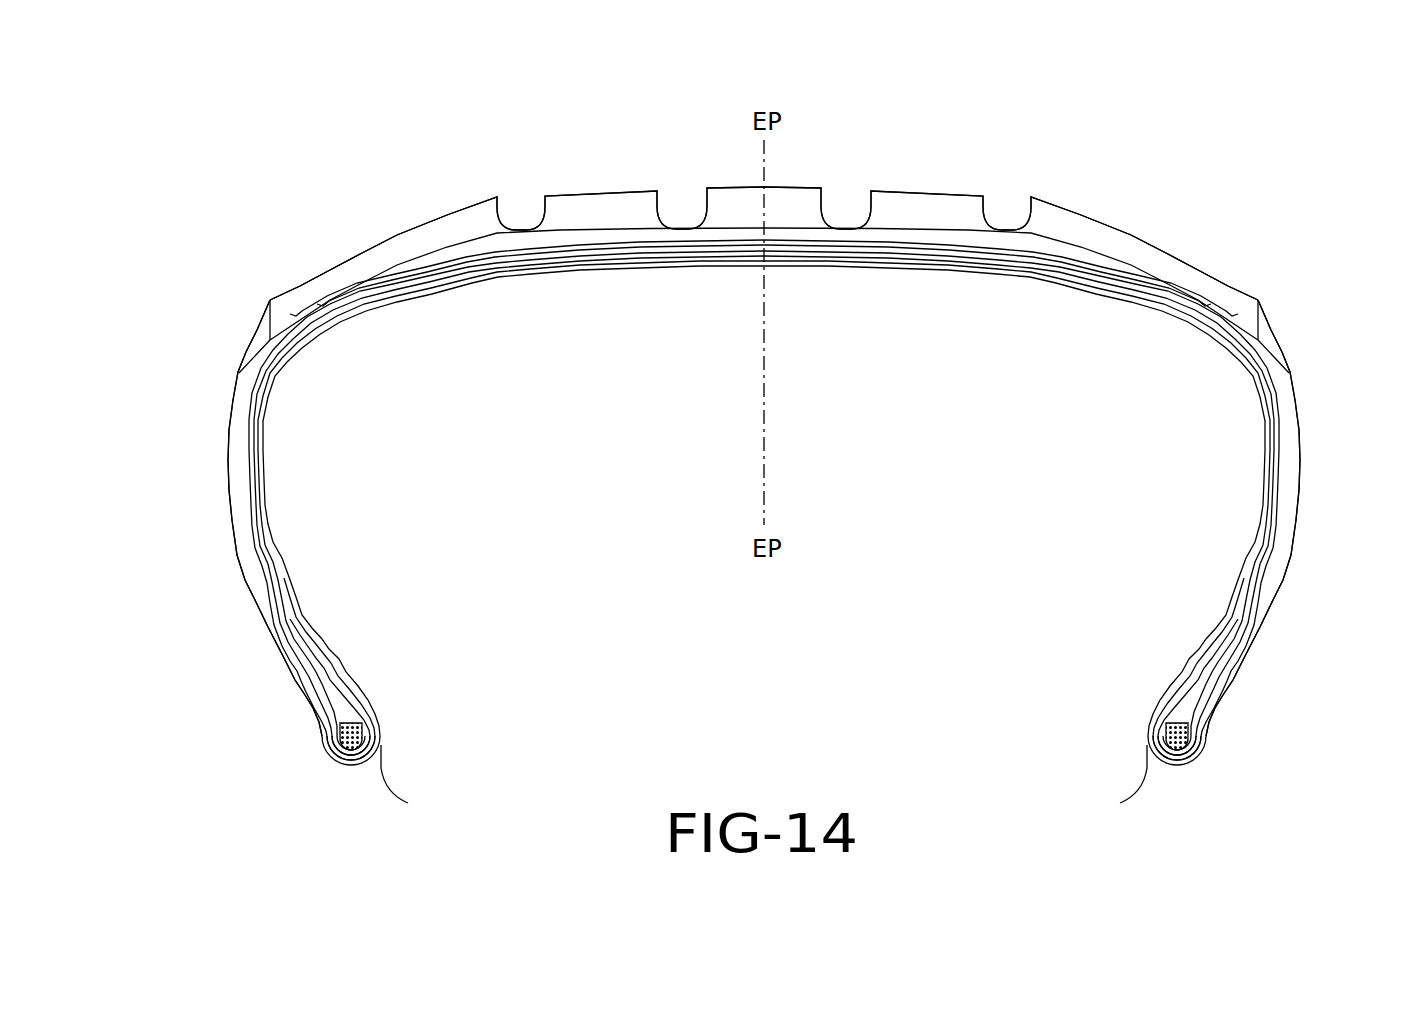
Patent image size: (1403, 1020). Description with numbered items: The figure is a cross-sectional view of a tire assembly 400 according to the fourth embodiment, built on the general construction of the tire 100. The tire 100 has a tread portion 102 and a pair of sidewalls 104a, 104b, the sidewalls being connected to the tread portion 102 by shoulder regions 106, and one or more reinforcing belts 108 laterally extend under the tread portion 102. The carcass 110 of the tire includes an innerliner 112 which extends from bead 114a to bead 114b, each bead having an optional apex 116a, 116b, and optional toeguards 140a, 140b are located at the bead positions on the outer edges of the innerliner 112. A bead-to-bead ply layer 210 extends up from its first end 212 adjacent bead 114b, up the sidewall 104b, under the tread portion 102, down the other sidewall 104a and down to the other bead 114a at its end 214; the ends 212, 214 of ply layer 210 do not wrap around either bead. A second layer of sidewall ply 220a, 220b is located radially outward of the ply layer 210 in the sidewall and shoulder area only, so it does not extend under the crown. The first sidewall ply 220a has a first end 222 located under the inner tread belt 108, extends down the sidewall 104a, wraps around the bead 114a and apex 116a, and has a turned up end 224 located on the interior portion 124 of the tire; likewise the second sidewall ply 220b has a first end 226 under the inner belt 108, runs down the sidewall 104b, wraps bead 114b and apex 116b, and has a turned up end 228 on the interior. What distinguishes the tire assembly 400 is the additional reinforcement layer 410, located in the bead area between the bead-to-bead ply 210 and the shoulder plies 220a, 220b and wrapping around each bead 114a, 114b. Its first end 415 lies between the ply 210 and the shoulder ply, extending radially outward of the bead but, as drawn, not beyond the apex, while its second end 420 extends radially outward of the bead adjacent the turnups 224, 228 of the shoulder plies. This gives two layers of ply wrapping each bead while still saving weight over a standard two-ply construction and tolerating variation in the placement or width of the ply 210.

The tire 100 is at (255, 645).
The tread portion 102 is at (918, 188).
The sidewall 104a is at (1292, 462).
The sidewall 104b is at (232, 462).
The shoulder region 106 is at (258, 340).
The reinforcing belt 108 is at (416, 258).
The carcass 110 is at (305, 372).
The innerliner 112 is at (648, 268).
The bead 114a is at (1165, 735).
The bead 114b is at (358, 735).
The apex 116a is at (1215, 632).
The apex 116b is at (305, 632).
The interior portion 124 is at (1150, 540).
The toeguard 140a is at (1120, 803).
The toeguard 140b is at (408, 803).
The ply layer 210 is at (844, 270).
The first end 212 is at (345, 726).
The end 214 is at (1183, 728).
The first sidewall ply 220a is at (1268, 498).
The second sidewall ply 220b is at (256, 500).
The first end 222 is at (1136, 288).
The turned up end 224 is at (1182, 684).
The first end 226 is at (392, 288).
The turned up end 228 is at (350, 700).
The tire assembly 400 is at (604, 158).
The additional reinforcement layer 410 is at (374, 718).
The first end 415 is at (287, 650).
The second end 420 is at (352, 690).